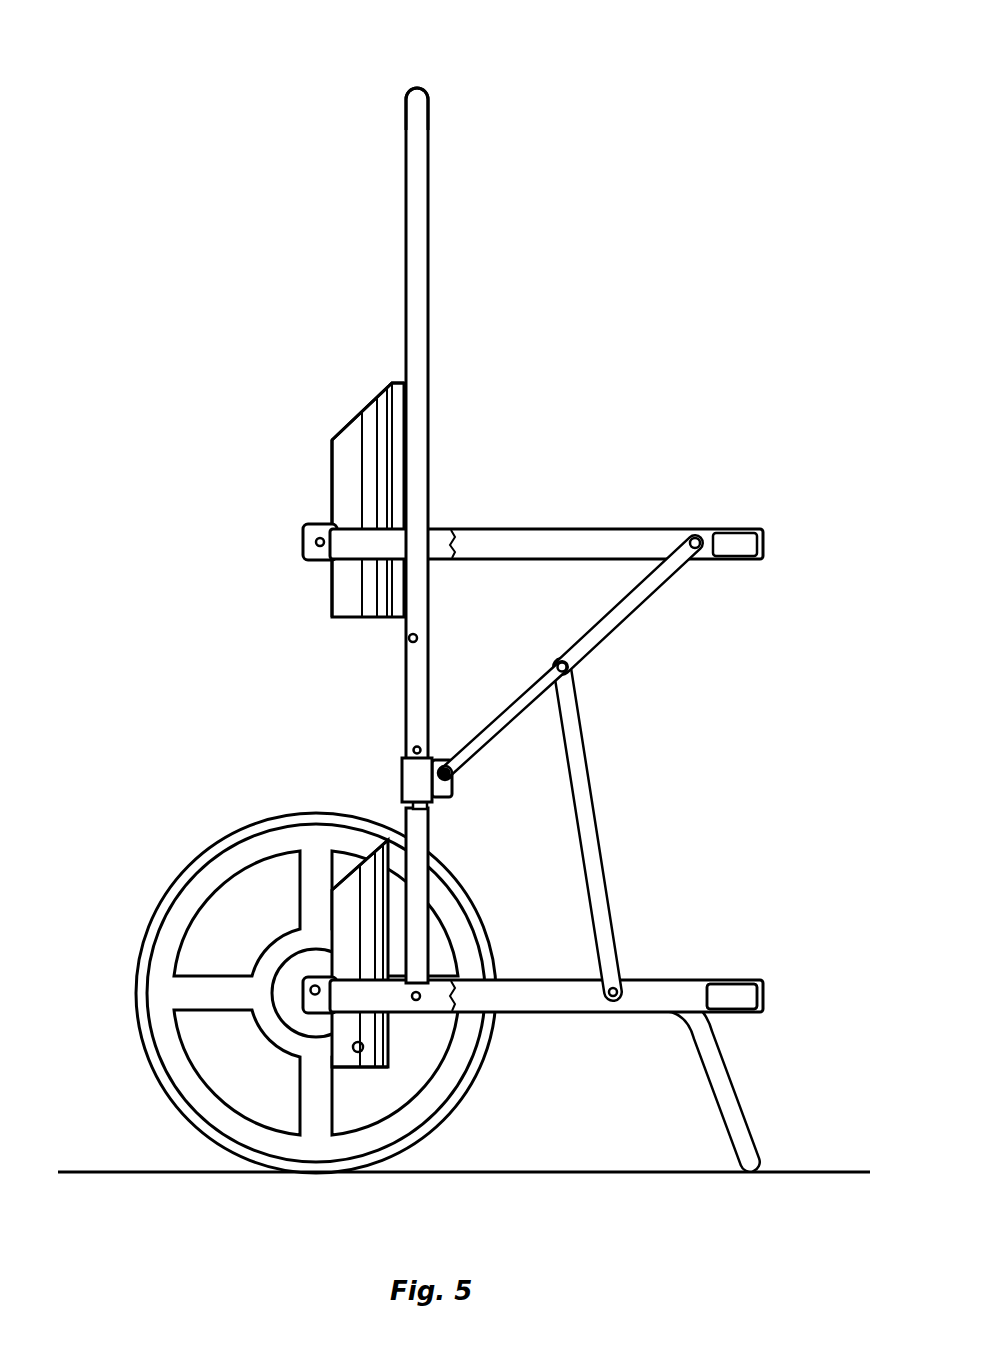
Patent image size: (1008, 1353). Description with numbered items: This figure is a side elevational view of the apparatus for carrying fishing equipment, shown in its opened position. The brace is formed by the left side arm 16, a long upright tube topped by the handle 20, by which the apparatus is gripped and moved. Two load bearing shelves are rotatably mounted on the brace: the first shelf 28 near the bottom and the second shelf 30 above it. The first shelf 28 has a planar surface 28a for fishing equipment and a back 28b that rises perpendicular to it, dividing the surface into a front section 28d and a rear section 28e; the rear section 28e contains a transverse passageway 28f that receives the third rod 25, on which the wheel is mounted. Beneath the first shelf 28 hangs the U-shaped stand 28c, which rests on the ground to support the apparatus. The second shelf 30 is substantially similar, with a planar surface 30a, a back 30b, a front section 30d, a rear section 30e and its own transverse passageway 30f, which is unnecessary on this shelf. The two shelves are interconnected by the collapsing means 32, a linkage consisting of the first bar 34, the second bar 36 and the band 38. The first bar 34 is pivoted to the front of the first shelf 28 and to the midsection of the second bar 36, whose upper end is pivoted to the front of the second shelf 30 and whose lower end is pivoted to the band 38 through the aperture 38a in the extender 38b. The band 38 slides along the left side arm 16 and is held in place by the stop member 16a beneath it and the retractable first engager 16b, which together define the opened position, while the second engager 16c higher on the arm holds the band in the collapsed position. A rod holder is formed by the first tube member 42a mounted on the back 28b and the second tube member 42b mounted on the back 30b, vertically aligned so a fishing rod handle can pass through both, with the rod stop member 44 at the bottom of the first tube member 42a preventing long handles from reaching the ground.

The left side arm 16 is at (406, 262).
The handle 20 is at (420, 88).
The stop member 16a is at (447, 812).
The first engager 16b is at (410, 748).
The second engager 16c is at (410, 640).
The third rod 25 is at (308, 994).
The first shelf 28 is at (768, 968).
The planar surface 28a is at (534, 968).
The back 28b is at (405, 905).
The stand 28c is at (745, 1107).
The front section 28d is at (441, 845).
The rear section 28e is at (388, 838).
The transverse passageway 28f is at (302, 1005).
The second shelf 30 is at (752, 512).
The planar surface 30a is at (573, 516).
The back 30b is at (352, 432).
The front section 30d is at (765, 440).
The rear section 30e is at (398, 367).
The transverse passageway 30f is at (303, 542).
The collapsing means 32 is at (788, 918).
The first bar 34 is at (586, 744).
The second bar 36 is at (645, 610).
The band 38 is at (400, 790).
The aperture 38a is at (450, 768).
The extender 38b is at (447, 765).
The first tube member 42a is at (375, 1105).
The second tube member 42b is at (335, 478).
The rod stop member 44 is at (355, 1047).